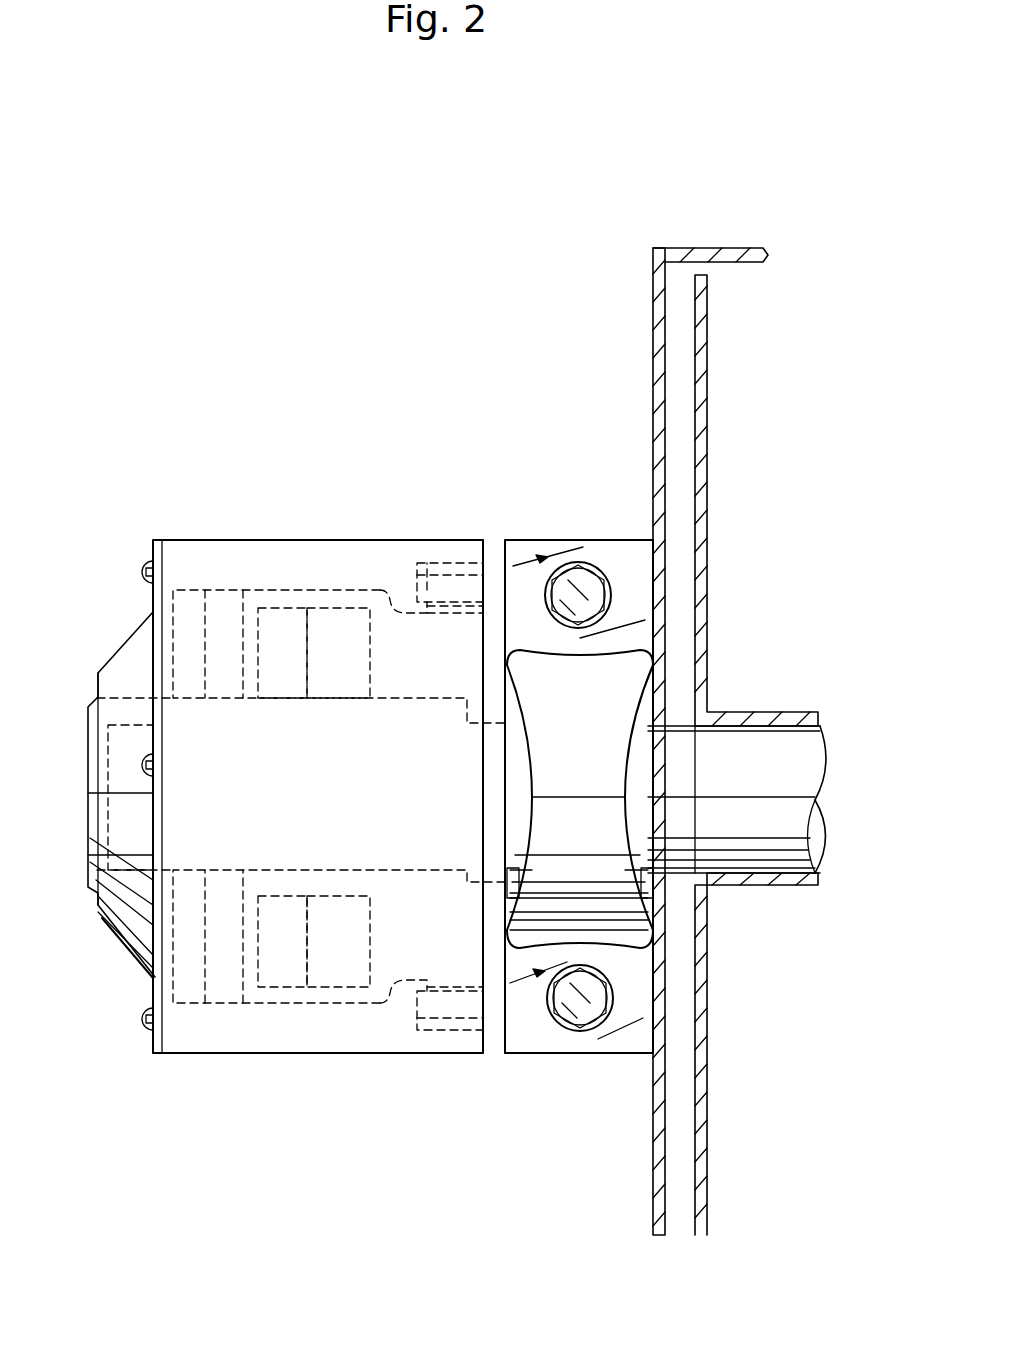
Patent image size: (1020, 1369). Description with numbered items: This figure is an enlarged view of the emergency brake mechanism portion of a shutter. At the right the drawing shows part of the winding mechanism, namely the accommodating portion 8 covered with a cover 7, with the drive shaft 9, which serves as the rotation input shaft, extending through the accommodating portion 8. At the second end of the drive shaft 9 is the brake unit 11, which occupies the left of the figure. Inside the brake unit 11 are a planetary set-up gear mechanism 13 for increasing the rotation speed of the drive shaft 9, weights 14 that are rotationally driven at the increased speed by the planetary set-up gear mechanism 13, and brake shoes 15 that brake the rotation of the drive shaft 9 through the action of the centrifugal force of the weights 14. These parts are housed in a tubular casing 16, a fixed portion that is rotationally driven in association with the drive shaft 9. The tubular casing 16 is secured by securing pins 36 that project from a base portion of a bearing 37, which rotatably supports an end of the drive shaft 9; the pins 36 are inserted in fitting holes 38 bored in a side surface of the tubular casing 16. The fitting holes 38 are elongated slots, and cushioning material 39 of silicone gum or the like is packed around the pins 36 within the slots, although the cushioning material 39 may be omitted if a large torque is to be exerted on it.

The cover 7 is at (692, 253).
The accommodating portion 8 is at (650, 1168).
The drive shaft 9 is at (763, 745).
The brake unit 11 is at (268, 1016).
The planetary set-up gear mechanism 13 is at (219, 605).
The weights 14 is at (281, 620).
The brake shoes 15 is at (334, 612).
The tubular casing 16 is at (405, 565).
The securing pins 36 is at (490, 574).
The bearing 37 is at (617, 715).
The fitting holes 38 is at (464, 566).
The cushioning material 39 is at (436, 612).